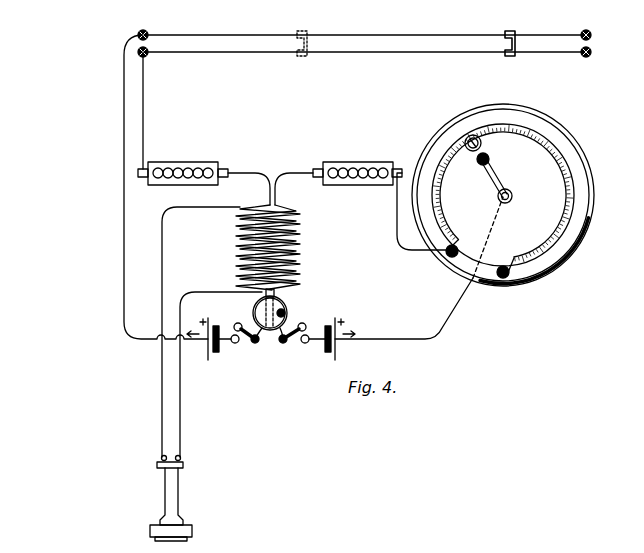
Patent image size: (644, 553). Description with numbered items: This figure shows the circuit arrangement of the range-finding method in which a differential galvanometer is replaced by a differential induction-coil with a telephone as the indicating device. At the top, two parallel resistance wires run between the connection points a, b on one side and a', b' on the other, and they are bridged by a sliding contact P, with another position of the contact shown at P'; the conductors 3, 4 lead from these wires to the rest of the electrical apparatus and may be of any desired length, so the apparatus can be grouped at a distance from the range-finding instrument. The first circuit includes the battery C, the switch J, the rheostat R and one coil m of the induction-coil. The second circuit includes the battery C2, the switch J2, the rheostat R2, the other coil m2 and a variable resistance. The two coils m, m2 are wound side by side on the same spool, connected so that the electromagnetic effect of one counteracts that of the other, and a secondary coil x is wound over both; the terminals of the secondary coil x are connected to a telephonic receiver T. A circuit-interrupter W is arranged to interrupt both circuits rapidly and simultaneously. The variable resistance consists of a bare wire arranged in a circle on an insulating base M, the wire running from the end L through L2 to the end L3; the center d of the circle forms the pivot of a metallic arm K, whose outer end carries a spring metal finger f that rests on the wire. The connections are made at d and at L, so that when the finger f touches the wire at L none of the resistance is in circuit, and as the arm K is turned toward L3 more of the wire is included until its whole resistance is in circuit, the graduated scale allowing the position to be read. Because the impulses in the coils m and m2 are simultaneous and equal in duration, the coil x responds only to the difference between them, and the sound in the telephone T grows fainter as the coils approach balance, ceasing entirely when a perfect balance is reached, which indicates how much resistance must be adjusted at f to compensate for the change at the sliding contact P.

The wire connection point a is at (147, 25).
The wire connection point b is at (147, 59).
The wire connection point a' is at (595, 34).
The wire connection point b' is at (596, 52).
The sliding contact P' is at (303, 55).
The sliding contact P is at (509, 55).
The conductor 3 is at (160, 187).
The conductor 4 is at (149, 110).
The rheostat R is at (183, 183).
The rheostat R2 is at (357, 185).
The coil m is at (245, 250).
The coil m2 is at (290, 239).
The secondary coil x is at (298, 268).
The circuit-interrupter W is at (265, 314).
The contact y is at (286, 308).
The battery C is at (207, 339).
The battery C2 is at (341, 341).
The switch J is at (237, 342).
The switch J2 is at (302, 345).
The base M is at (582, 245).
The resistance-wire L2 is at (549, 126).
The metallic arm K is at (494, 175).
The spring metal finger f is at (468, 136).
The center of circle d is at (509, 203).
The resistance-wire end L is at (459, 250).
The resistance-wire end L3 is at (502, 262).
The telephonic receiver T is at (174, 499).